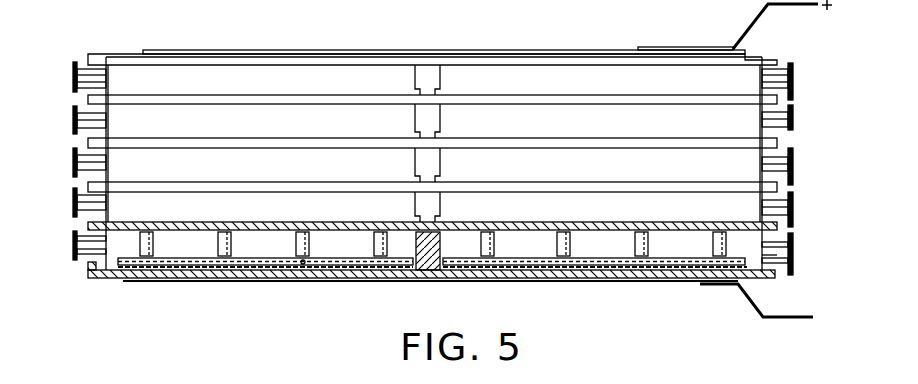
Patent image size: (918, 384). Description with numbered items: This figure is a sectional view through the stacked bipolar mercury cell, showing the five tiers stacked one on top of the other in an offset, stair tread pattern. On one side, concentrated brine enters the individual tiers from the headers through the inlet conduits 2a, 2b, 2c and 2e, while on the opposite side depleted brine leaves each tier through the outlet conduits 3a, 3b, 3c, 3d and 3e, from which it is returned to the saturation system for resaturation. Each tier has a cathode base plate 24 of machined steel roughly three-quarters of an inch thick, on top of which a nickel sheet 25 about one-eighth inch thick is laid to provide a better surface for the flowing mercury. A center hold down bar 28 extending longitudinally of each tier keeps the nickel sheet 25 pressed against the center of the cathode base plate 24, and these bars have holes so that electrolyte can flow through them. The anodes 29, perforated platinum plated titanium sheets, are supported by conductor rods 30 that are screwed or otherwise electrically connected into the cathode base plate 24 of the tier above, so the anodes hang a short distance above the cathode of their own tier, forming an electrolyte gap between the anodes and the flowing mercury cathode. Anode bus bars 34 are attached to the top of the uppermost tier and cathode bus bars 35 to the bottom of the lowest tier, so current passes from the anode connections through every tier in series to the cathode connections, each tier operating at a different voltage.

The concentrated brine conduit 2a is at (74, 64).
The concentrated brine conduit 2b is at (74, 112).
The concentrated brine conduit 2c is at (74, 156).
The concentrated brine conduit 2e is at (74, 238).
The depleted brine conduit 3a is at (789, 64).
The depleted brine conduit 3b is at (792, 130).
The depleted brine conduit 3c is at (792, 176).
The depleted brine conduit 3d is at (792, 220).
The depleted brine conduit 3e is at (792, 260).
The cathode base plate 24 is at (247, 266).
The nickel sheet 25 is at (303, 266).
The center hold down bar 28 is at (440, 78).
The anode 29 is at (188, 251).
The conductor rod 30 is at (310, 243).
The anode bus bar 34 is at (617, 50).
The cathode bus bar 35 is at (362, 282).